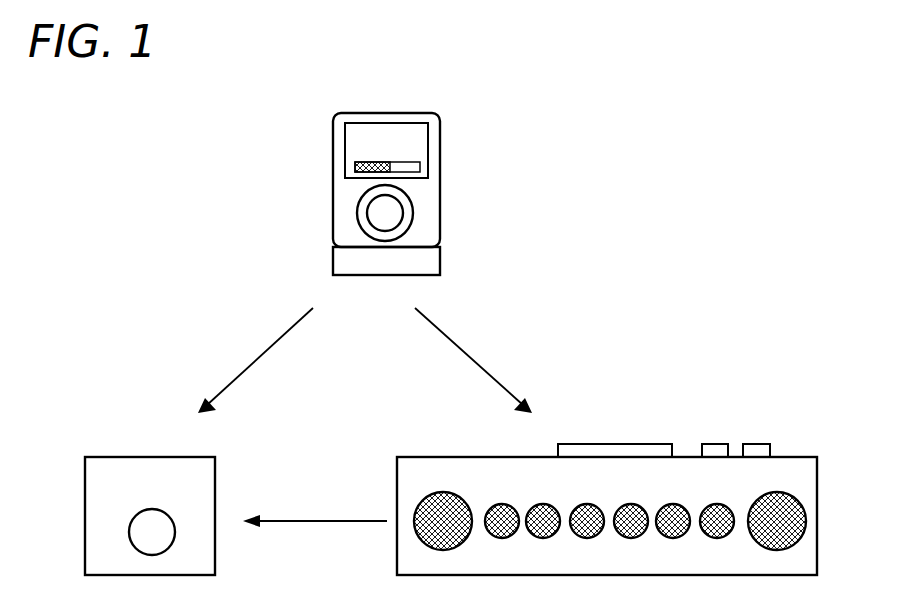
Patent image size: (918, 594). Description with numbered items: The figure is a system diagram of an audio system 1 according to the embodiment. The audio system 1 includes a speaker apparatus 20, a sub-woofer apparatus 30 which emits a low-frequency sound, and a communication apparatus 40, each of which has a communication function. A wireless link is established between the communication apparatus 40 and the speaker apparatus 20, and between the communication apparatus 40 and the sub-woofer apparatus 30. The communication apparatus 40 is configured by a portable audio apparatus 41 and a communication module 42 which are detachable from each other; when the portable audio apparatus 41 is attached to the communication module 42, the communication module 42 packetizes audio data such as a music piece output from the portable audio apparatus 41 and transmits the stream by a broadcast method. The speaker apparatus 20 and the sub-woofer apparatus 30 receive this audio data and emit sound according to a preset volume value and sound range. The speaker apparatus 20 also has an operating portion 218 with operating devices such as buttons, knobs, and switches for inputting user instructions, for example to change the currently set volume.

The audio system 1 is at (569, 154).
The speaker apparatus 20 is at (799, 448).
The operating portion 218 is at (778, 440).
The sub-woofer apparatus 30 is at (109, 449).
The communication apparatus 40 is at (305, 133).
The portable audio apparatus 41 is at (335, 188).
The communication module 42 is at (337, 262).